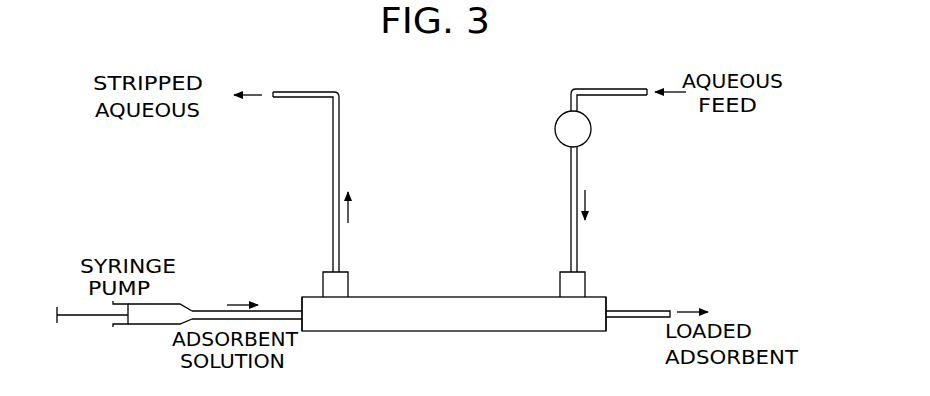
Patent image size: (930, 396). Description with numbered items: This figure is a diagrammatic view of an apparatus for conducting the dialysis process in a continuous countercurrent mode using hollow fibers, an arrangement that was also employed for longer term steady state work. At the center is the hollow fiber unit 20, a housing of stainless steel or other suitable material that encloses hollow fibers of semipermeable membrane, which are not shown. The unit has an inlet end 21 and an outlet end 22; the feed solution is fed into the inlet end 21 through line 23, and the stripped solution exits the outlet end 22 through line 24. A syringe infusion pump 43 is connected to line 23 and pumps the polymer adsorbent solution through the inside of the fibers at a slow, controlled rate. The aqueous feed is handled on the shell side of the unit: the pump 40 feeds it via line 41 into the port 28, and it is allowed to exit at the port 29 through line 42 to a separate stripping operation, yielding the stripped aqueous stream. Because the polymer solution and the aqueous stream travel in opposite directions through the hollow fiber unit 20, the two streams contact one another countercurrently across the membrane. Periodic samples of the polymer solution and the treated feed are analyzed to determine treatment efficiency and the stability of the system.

The hollow fiber unit 20 is at (468, 328).
The inlet end 21 is at (312, 323).
The outlet end 22 is at (595, 325).
The feed line 23 is at (278, 310).
The stripped solution outlet line 24 is at (645, 310).
The inlet port 28 is at (577, 283).
The exit port 29 is at (343, 285).
The pump 40 is at (590, 135).
The adsorbent feed line 41 is at (570, 205).
The adsorbent exit line 42 is at (339, 172).
The syringe infusion pump 43 is at (152, 320).